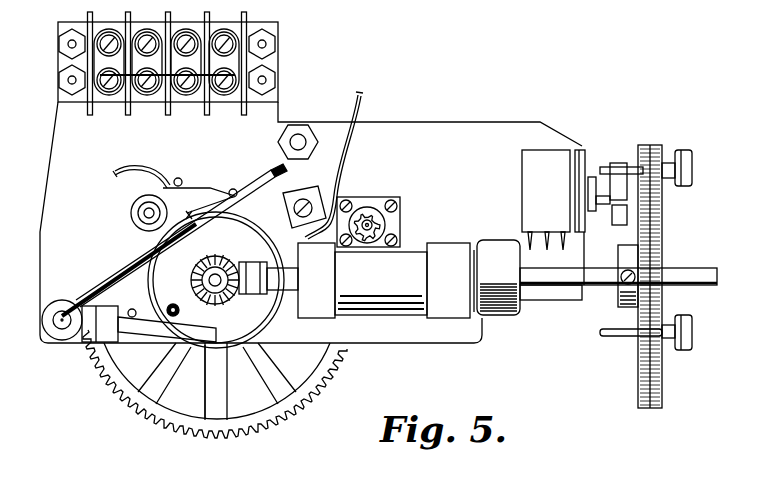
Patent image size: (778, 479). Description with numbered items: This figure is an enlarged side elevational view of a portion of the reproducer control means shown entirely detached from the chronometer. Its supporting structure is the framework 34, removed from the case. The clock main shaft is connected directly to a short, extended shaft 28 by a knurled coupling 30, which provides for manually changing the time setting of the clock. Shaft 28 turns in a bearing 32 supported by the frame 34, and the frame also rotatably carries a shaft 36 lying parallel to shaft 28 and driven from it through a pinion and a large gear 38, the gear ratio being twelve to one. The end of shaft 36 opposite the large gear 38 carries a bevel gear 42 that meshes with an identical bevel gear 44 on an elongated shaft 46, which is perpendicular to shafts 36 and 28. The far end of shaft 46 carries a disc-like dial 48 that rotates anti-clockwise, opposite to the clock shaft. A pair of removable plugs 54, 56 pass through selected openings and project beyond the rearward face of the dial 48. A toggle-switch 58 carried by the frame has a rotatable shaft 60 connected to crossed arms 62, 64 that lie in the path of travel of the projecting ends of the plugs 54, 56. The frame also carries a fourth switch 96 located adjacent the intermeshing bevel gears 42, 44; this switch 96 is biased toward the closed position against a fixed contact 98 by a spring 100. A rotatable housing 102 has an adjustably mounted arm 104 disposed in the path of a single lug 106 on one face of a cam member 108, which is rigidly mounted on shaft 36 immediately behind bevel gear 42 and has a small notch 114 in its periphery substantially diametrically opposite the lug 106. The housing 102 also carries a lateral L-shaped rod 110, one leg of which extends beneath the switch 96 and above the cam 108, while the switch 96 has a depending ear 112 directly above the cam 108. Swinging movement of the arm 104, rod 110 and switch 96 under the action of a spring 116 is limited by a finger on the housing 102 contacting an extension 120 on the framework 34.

The extended shaft 28 is at (360, 210).
The knurled coupling 30 is at (383, 223).
The bearing 32 is at (400, 320).
The framework 34 is at (311, 222).
The shaft 36 is at (205, 262).
The large gear 38 is at (194, 428).
The bevel gear 42 is at (222, 300).
The bevel gear 44 is at (262, 316).
The elongated shaft 46 is at (712, 285).
The disc-like dial 48 is at (662, 384).
The removable plug 54 is at (692, 168).
The removable plug 56 is at (692, 338).
The toggle-switch 58 is at (558, 152).
The rotatable shaft 60 is at (594, 178).
The crossed arm 62 is at (616, 206).
The crossed arm 64 is at (630, 210).
The fourth switch 96 is at (215, 188).
The fixed contact 98 is at (285, 198).
The spring 100 is at (180, 172).
The rotatable housing 102 is at (60, 340).
The adjustably mounted arm 104 is at (172, 342).
The lug 106 is at (170, 305).
The cam member 108 is at (232, 340).
The rod 110 is at (135, 262).
The depending ear 112 is at (225, 210).
The notch 114 is at (298, 262).
The spring 116 is at (140, 228).
The extension 120 is at (132, 318).